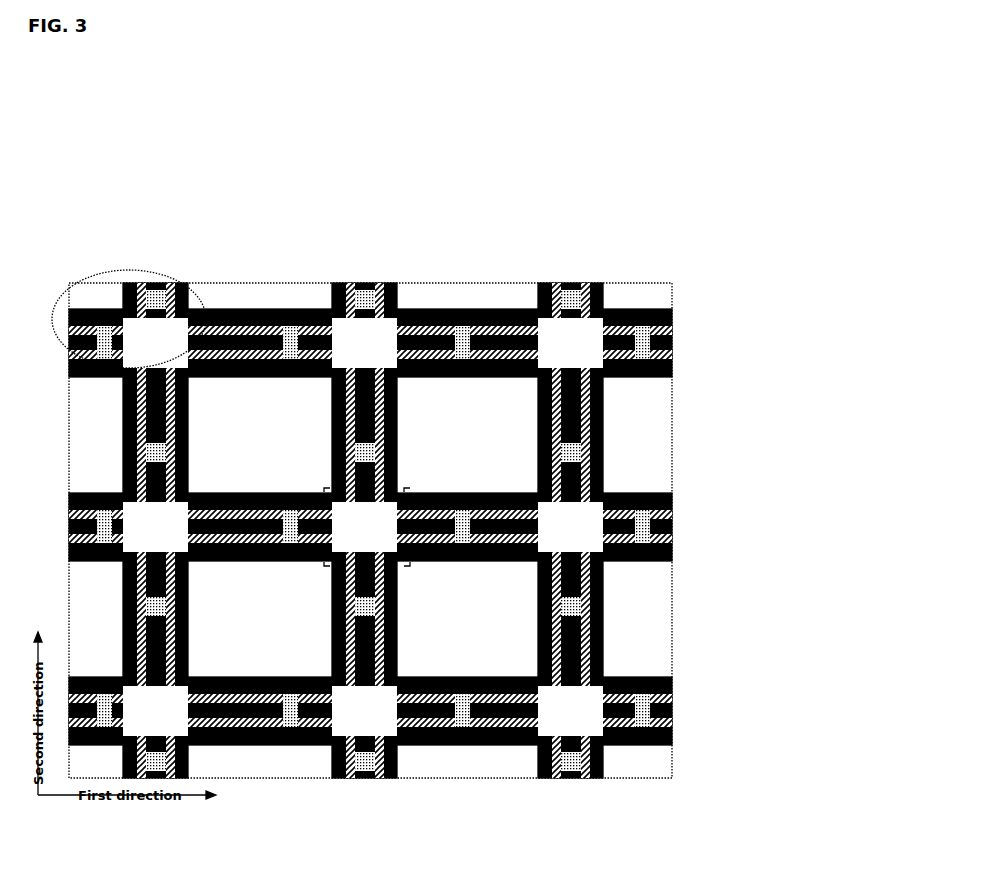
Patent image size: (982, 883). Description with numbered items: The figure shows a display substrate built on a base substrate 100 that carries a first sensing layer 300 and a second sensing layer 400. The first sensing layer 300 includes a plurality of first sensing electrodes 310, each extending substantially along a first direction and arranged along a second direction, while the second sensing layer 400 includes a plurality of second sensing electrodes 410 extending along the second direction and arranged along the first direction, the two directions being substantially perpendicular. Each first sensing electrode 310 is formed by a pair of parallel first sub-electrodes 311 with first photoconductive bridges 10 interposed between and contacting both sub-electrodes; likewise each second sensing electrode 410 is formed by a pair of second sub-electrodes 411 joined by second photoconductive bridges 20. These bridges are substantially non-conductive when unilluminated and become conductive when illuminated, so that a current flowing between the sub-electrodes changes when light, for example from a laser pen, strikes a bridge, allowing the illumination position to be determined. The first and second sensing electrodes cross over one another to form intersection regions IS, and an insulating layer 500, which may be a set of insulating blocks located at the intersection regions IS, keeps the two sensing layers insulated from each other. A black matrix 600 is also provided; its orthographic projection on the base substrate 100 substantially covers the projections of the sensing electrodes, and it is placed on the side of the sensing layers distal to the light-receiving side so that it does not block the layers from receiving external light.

The first photoconductive bridge 10 is at (467, 745).
The second photoconductive bridge 20 is at (568, 778).
The base substrate 100 is at (637, 778).
The first sensing layer 300 is at (830, 330).
The first sensing electrode 310 is at (758, 315).
The first sub-electrode 311 is at (672, 328).
The second sensing layer 400 is at (612, 145).
The second sensing electrode 410 is at (229, 192).
The second sub-electrode 411 is at (142, 283).
The insulating layer 500 is at (363, 342).
The black matrix 600 is at (628, 308).
The intersection region IS is at (374, 518).